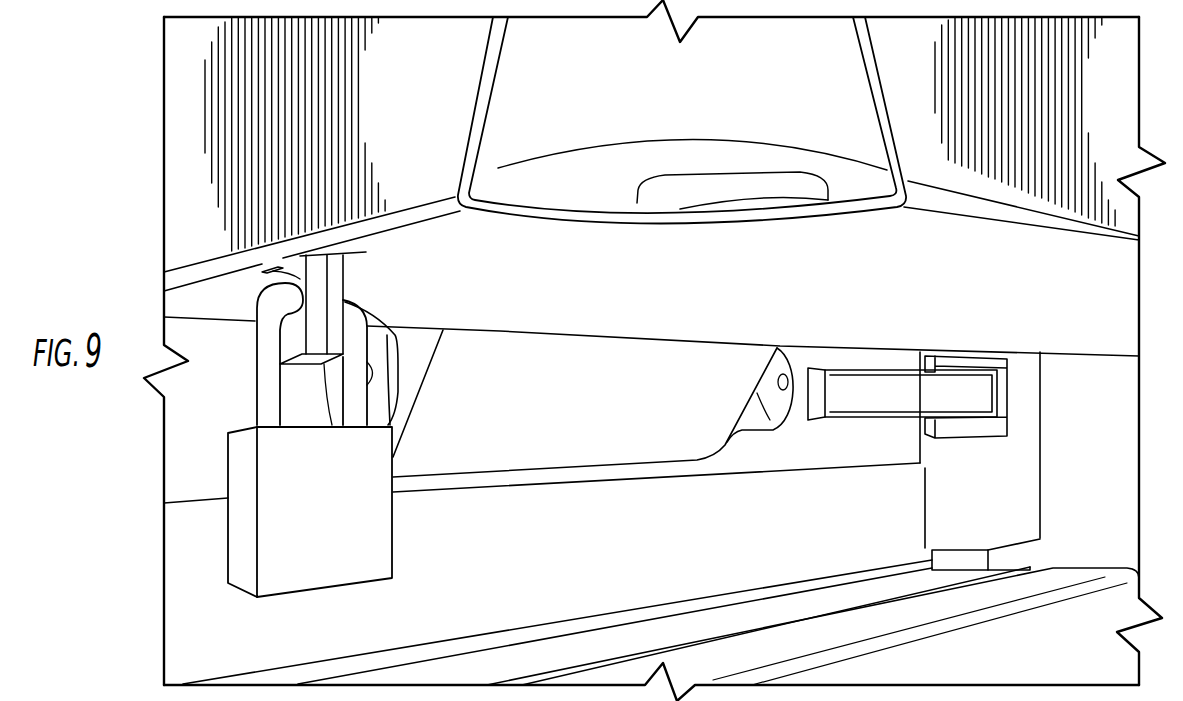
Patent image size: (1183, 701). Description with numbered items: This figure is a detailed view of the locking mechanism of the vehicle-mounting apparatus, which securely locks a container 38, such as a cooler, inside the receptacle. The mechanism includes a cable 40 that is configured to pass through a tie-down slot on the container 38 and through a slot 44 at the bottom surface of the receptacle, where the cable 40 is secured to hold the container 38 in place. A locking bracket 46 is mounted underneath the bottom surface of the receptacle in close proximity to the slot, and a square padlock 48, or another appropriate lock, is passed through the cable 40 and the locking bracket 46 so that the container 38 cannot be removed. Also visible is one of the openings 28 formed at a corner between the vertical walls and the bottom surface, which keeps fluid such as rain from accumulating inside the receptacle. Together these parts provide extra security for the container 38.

The opening 28 is at (508, 178).
The container 38 is at (743, 147).
The cable 40 is at (345, 302).
The slot 44 is at (353, 258).
The locking bracket 46 is at (272, 271).
The square padlock 48 is at (335, 573).